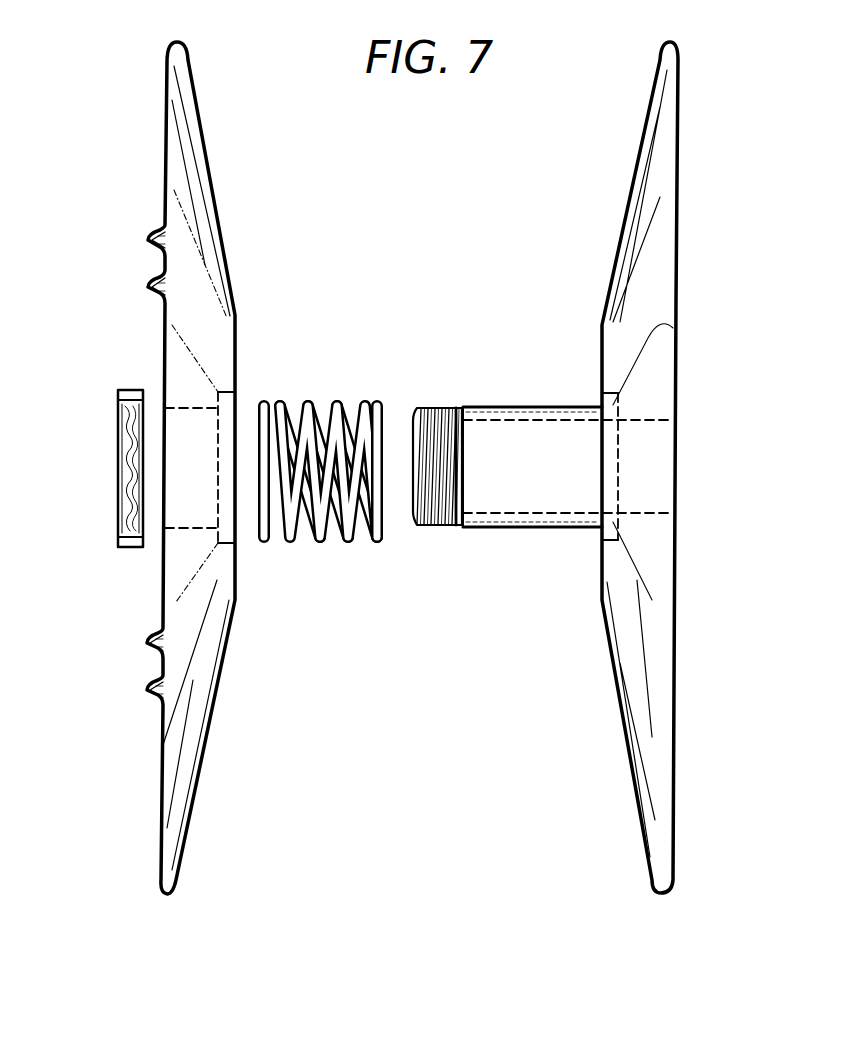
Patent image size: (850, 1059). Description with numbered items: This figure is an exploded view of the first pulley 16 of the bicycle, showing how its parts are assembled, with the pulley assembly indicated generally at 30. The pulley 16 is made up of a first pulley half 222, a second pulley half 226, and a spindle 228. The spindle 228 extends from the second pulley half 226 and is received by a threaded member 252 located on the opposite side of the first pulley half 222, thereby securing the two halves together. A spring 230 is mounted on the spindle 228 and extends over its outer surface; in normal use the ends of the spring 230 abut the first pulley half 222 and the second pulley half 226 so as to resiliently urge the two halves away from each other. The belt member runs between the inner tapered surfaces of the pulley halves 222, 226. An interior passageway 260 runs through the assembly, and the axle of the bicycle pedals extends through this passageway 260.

The pulley 16 is at (713, 173).
The wheel assembly 30 is at (838, 416).
The first pulley half 222 is at (207, 245).
The second pulley half 226 is at (689, 467).
The spindle 228 is at (557, 407).
The spring 230 is at (318, 398).
The threaded member 252 is at (124, 390).
The interior passageway 260 is at (650, 513).